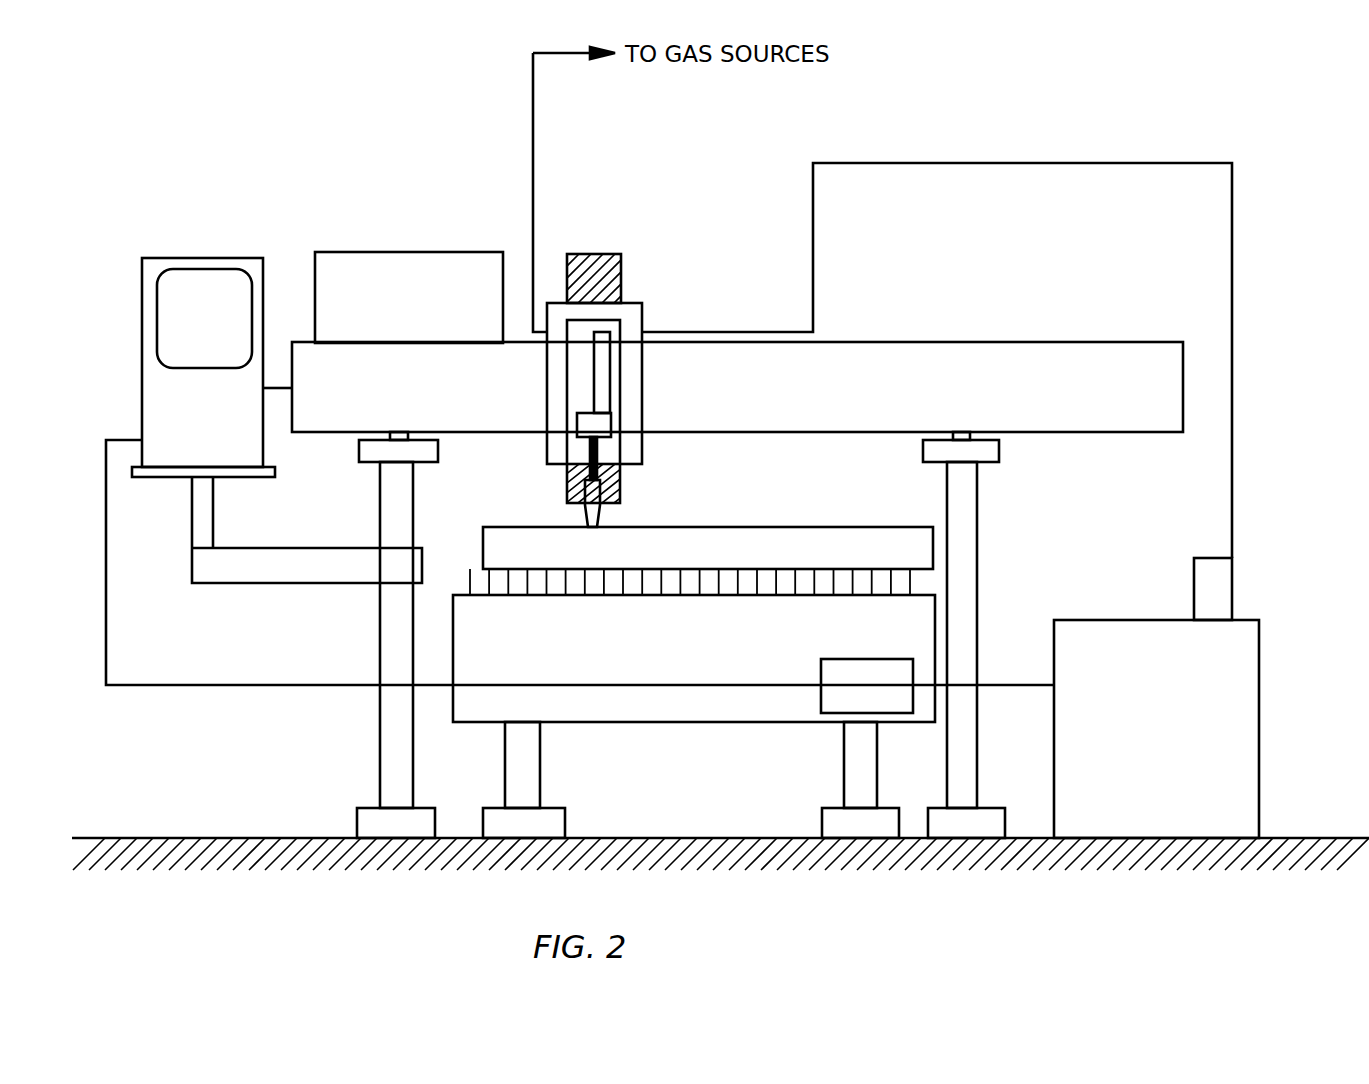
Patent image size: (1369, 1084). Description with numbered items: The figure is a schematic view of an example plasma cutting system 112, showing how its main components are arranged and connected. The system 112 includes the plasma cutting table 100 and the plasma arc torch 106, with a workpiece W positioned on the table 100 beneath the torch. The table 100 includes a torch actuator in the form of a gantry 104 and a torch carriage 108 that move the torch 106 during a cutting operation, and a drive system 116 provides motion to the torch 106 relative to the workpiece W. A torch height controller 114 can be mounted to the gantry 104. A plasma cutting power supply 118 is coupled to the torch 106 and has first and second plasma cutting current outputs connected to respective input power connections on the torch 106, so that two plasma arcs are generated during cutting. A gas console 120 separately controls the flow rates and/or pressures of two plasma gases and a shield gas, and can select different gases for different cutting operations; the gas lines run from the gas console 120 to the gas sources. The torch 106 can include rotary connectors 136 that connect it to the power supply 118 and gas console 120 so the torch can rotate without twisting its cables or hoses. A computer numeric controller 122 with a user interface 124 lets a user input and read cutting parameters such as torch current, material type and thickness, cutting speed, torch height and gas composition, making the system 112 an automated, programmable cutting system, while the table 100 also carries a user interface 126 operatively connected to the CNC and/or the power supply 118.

The plasma cutting table 100 is at (661, 724).
The gantry 104 is at (1043, 342).
The plasma arc torch 106 is at (602, 518).
The torch carriage 108 is at (636, 303).
The plasma cutting system 112 is at (138, 745).
The torch height controller 114 is at (598, 254).
The drive system 116 is at (367, 252).
The plasma cutting power supply 118 is at (1262, 686).
The gas console 120 is at (620, 380).
The computer numeric controller 122 is at (143, 417).
The user interface 124 is at (156, 320).
The user interface 126 is at (821, 668).
The rotary connectors 136 is at (577, 422).
The workpiece W is at (820, 527).